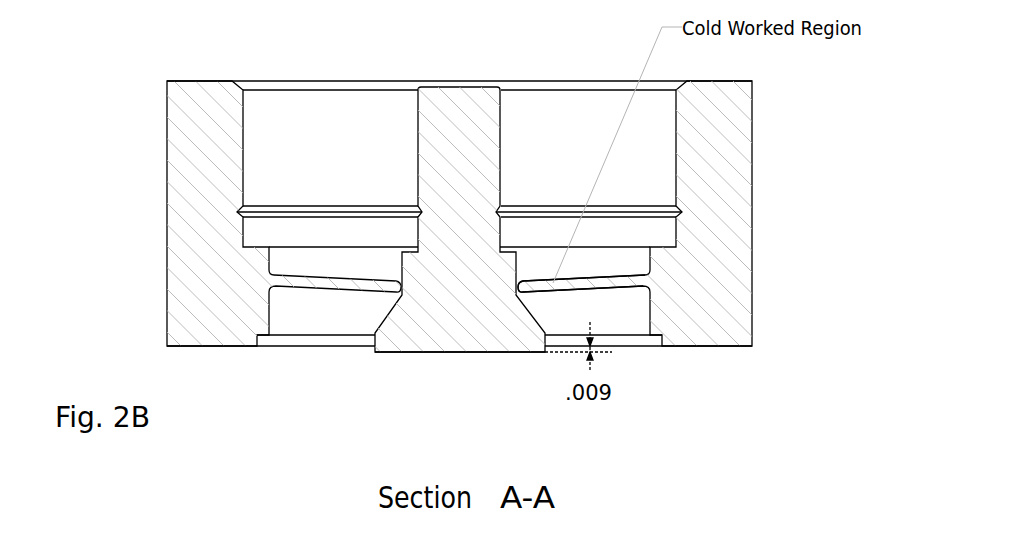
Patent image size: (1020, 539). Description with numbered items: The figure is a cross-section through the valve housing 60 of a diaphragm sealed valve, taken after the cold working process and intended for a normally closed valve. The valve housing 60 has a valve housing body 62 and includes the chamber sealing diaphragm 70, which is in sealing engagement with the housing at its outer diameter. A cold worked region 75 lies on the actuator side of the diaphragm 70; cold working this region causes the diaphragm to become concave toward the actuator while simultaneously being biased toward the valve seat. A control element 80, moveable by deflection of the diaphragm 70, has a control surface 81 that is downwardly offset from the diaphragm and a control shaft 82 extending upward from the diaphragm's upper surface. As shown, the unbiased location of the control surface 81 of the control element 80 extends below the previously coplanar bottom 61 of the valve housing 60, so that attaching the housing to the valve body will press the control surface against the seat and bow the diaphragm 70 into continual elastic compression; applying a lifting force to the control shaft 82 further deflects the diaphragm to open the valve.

The valve housing 60 is at (188, 202).
The bottom of the valve housing 61 is at (703, 347).
The valve housing body 62 is at (728, 169).
The chamber sealing diaphragm 70 is at (302, 278).
The cold worked region 75 is at (550, 285).
The control element 80 is at (457, 340).
The control surface 81 is at (503, 350).
The control shaft 82 is at (465, 128).